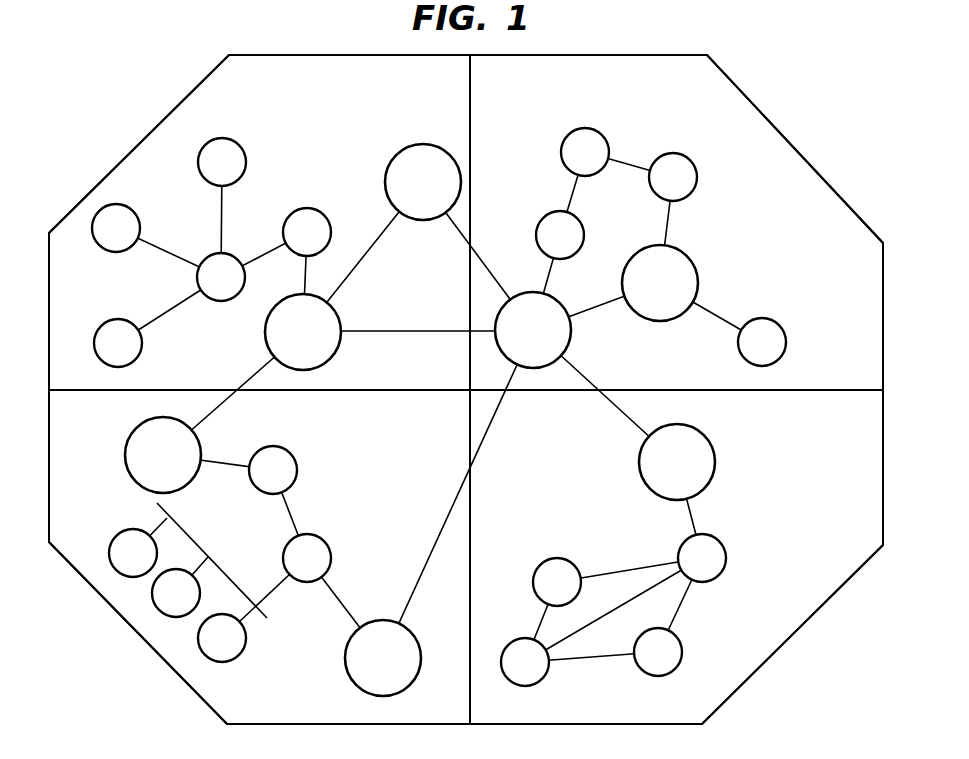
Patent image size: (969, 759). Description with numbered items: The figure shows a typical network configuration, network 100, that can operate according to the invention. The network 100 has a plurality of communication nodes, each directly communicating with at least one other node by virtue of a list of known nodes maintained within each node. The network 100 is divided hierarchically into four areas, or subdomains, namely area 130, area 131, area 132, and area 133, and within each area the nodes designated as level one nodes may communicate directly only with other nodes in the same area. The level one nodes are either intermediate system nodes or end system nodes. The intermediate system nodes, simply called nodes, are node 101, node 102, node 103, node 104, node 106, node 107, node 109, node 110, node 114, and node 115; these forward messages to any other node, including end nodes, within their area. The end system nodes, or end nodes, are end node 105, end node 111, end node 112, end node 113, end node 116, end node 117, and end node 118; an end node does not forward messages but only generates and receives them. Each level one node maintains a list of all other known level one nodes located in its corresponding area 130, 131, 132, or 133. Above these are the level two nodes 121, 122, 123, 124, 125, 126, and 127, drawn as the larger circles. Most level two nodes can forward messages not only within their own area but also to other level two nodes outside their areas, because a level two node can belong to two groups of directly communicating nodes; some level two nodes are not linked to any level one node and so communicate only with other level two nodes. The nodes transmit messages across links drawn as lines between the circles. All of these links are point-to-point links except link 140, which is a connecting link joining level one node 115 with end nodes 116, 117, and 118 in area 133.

The network 100 is at (73, 86).
The intermediate system node 101 is at (720, 543).
The intermediate system node 102 is at (543, 220).
The intermediate system node 103 is at (547, 682).
The intermediate system node 104 is at (565, 557).
The end system node 105 is at (787, 340).
The intermediate system node 106 is at (700, 170).
The intermediate system node 107 is at (607, 143).
The intermediate system node 109 is at (317, 213).
The intermediate system node 110 is at (220, 302).
The end system node 111 is at (247, 152).
The end system node 112 is at (140, 218).
The end system node 113 is at (142, 350).
The intermediate system node 114 is at (295, 452).
The intermediate system node 115 is at (330, 547).
The end system node 116 is at (113, 542).
The end system node 117 is at (152, 593).
The end system node 118 is at (198, 642).
The level 2 node 121 is at (715, 455).
The level 2 node 122 is at (700, 270).
The level 2 node 123 is at (572, 337).
The level 2 node 124 is at (400, 143).
The level 2 node 125 is at (350, 318).
The level 2 node 126 is at (127, 448).
The level 2 node 127 is at (347, 667).
The area 130 is at (883, 540).
The area 131 is at (795, 143).
The area 132 is at (97, 190).
The area 133 is at (155, 650).
The link 140 is at (207, 552).